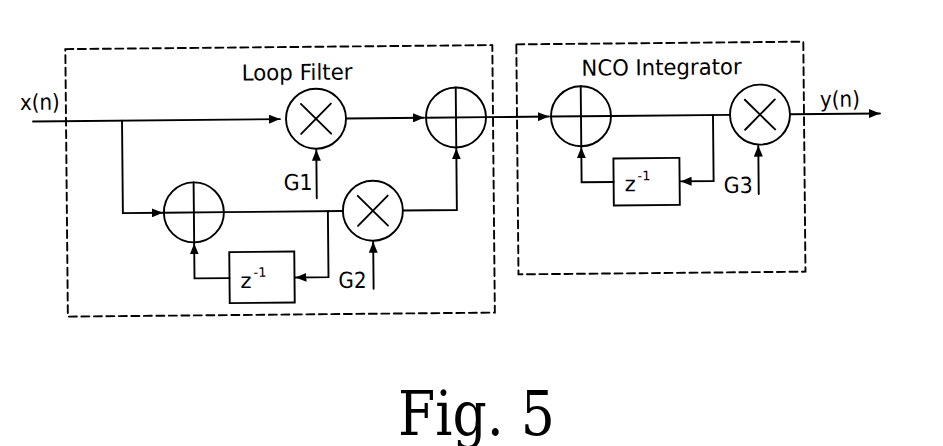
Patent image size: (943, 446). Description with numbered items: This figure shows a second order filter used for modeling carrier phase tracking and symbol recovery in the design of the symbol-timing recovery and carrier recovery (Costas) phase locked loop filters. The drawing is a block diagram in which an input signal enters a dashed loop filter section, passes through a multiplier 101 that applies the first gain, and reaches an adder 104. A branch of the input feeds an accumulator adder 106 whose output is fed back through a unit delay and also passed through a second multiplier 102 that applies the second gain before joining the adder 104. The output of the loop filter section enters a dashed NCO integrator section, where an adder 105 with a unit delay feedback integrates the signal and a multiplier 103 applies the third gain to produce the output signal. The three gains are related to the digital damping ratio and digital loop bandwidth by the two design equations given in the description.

The first multiplier (gain G1) of loop filter 101 is at (338, 96).
The second multiplier (gain G2) of loop filter 102 is at (369, 180).
The multiplier (gain G3) of NCO integrator 103 is at (757, 87).
The adder of loop filter 104 is at (478, 92).
The adder of NCO integrator 105 is at (575, 88).
The accumulator adder of loop filter 106 is at (214, 186).